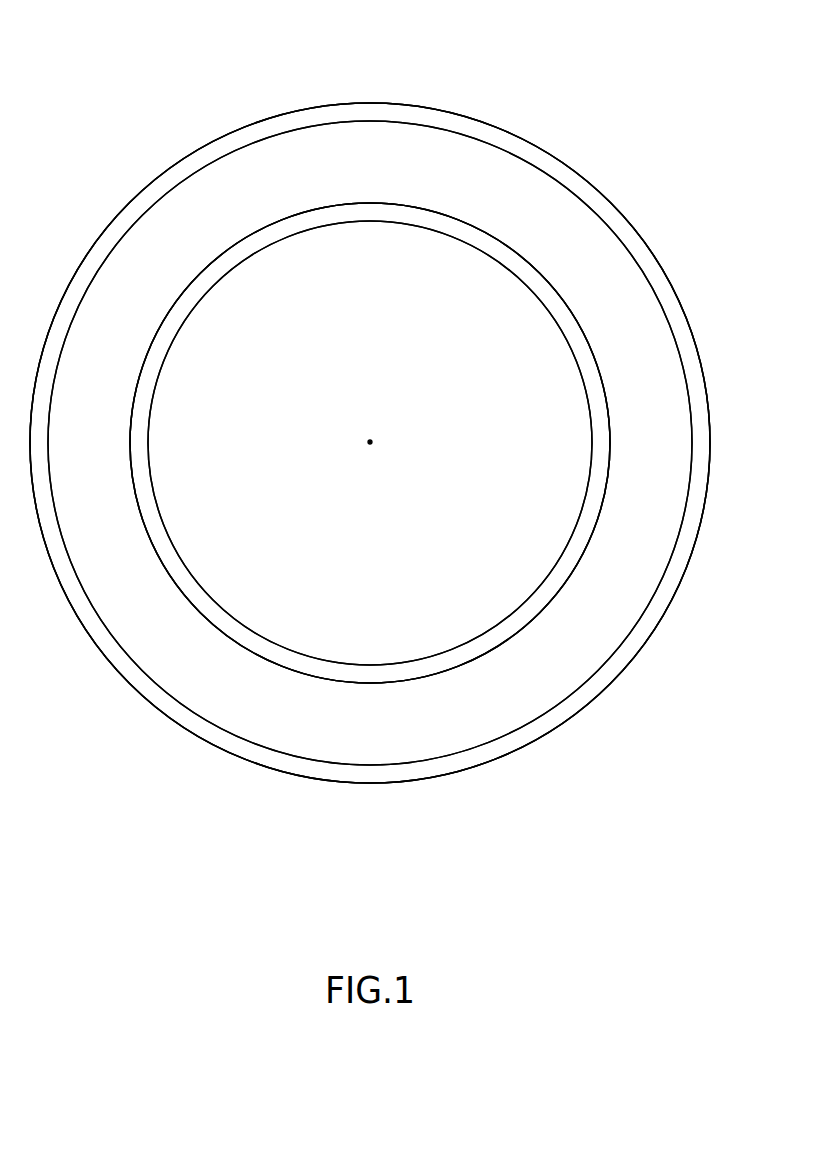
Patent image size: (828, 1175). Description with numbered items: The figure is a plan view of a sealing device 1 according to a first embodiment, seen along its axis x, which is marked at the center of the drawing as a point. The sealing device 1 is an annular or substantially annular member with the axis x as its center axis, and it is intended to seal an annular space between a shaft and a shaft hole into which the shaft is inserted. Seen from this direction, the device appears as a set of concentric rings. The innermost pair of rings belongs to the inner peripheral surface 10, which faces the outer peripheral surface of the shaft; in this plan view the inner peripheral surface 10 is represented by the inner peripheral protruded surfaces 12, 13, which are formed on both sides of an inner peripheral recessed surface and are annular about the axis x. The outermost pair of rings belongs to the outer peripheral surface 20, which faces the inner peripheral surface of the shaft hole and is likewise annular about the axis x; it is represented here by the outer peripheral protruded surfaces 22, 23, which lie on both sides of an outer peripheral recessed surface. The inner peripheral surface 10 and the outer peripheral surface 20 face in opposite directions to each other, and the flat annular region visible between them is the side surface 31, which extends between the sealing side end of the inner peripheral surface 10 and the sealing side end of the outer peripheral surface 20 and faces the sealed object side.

The sealing device 1 is at (374, 441).
The inner peripheral surface 10 is at (190, 538).
The inner peripheral protruded surface 12 is at (203, 279).
The inner peripheral protruded surface 13 is at (370, 443).
The outer peripheral surface 20 is at (147, 183).
The outer peripheral protruded surface 22 is at (368, 108).
The outer peripheral protruded surface 23 is at (370, 443).
The side surface 31 is at (600, 273).
The axis x is at (374, 441).